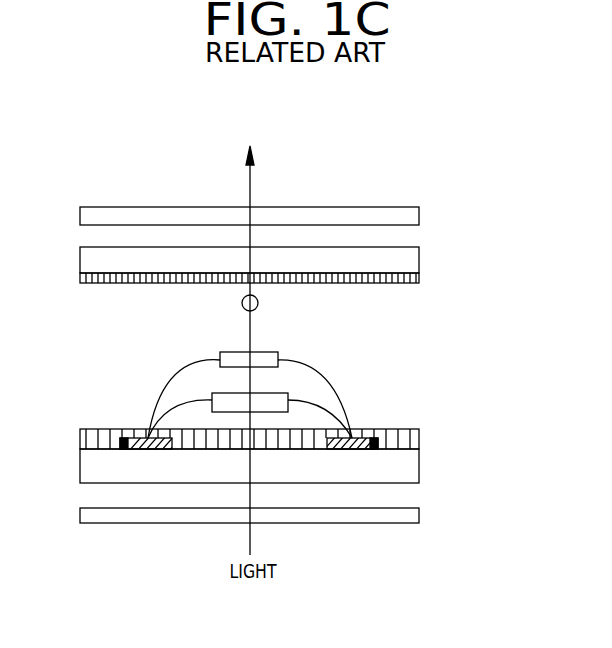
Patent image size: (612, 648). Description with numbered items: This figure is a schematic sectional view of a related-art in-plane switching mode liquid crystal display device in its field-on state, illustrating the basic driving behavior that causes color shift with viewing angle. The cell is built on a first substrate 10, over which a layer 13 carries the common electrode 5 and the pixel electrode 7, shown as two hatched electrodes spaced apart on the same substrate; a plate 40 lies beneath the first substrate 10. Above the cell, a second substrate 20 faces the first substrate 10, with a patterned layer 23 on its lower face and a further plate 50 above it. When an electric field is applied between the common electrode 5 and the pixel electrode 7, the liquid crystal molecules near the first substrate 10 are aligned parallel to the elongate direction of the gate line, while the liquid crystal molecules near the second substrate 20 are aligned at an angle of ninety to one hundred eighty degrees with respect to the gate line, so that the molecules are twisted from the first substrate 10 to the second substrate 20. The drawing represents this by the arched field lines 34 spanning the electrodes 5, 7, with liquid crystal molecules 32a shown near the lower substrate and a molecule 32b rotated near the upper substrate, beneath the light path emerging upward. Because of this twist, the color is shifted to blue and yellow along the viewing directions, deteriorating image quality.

The diffuser plate 50 is at (410, 215).
The second substrate 20 is at (410, 258).
The pattern layer 23 is at (414, 282).
The second phosphor 32b is at (258, 303).
The first phosphor 32a is at (229, 400).
The encapsulant dome 34 is at (313, 372).
The insulating layer 13 is at (416, 440).
The common electrode 5 is at (126, 438).
The pixel electrode 7 is at (372, 437).
The first substrate 10 is at (410, 470).
The heat sink 40 is at (410, 515).